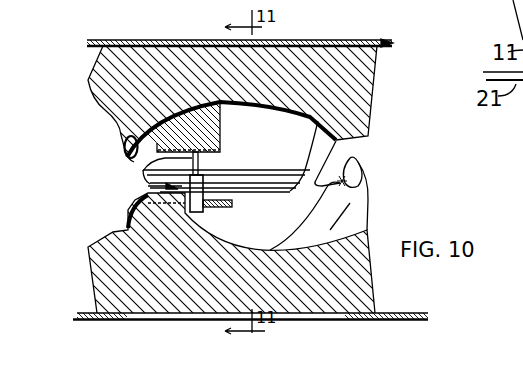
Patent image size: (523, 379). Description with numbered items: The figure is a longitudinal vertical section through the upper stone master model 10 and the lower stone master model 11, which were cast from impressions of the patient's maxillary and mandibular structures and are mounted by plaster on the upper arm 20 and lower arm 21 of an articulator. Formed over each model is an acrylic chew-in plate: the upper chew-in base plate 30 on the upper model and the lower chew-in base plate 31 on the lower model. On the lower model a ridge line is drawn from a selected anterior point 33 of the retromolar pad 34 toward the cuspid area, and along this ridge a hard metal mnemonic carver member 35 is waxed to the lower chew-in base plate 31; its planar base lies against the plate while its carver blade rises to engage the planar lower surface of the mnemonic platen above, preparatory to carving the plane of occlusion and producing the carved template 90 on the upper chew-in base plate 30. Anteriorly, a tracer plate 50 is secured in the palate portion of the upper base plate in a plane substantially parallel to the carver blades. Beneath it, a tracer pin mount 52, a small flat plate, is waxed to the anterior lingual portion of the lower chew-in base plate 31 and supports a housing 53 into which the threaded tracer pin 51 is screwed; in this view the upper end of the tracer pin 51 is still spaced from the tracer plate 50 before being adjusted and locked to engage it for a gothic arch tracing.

The upper stone master model 10 is at (100, 66).
The lower stone master model 11 is at (100, 272).
The upper arm of articulator 20 is at (128, 40).
The lower arm of articulator 21 is at (92, 318).
The upper chew-in base plate 30 is at (123, 139).
The lower chew-in base plate 31 is at (127, 222).
The anterior point of retromolar pad 33 is at (347, 181).
The retromolar pad 34 is at (352, 158).
The mnemonic carver member 35 is at (307, 175).
The tracer plate 50 is at (150, 172).
The tracer pin 51 is at (200, 167).
The tracer pin mount 52 is at (232, 204).
The housing 53 is at (155, 188).
The carved template 90 is at (248, 192).